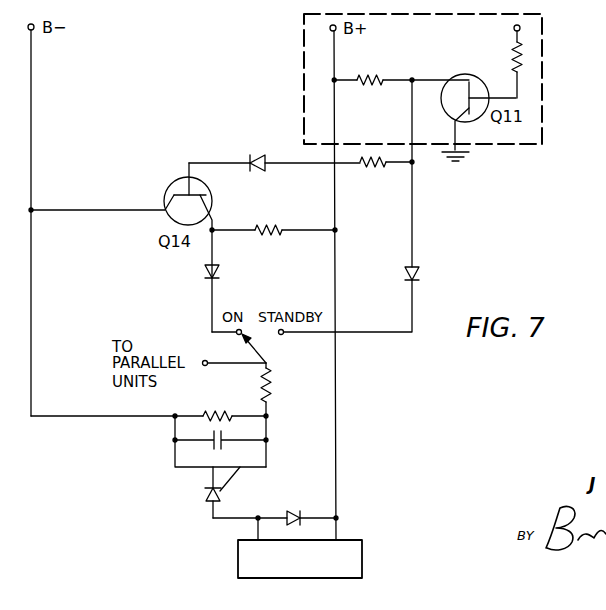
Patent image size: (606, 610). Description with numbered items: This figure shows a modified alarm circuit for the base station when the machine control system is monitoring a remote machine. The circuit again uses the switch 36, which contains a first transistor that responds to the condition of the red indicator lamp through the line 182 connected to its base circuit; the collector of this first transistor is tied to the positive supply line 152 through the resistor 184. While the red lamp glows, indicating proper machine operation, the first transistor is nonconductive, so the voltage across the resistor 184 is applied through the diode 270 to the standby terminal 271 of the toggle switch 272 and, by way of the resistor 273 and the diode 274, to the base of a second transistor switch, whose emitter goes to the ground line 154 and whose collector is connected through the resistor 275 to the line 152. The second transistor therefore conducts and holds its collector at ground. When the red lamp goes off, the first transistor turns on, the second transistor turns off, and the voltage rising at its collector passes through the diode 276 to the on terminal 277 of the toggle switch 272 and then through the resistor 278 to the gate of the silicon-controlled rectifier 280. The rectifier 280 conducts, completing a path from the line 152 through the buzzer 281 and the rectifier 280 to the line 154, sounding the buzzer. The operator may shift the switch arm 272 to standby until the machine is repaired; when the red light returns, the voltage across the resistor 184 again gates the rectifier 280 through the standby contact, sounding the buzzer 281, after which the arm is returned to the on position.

The negative supply line 154 is at (33, 133).
The positive supply line 152 is at (336, 64).
The switch 36 is at (546, 79).
The line 182 is at (513, 32).
The resistor 184 is at (366, 86).
The resistor 273 is at (369, 171).
The diode 274 is at (257, 154).
The resistor 275 is at (268, 225).
The diode 276 is at (220, 278).
The diode 270 is at (420, 276).
The standby terminal 271 is at (283, 335).
The toggle switch 272 is at (249, 340).
The on terminal 277 is at (237, 335).
The resistor 278 is at (262, 386).
The silicon-controlled rectifier 280 is at (204, 497).
The buzzer 281 is at (347, 548).